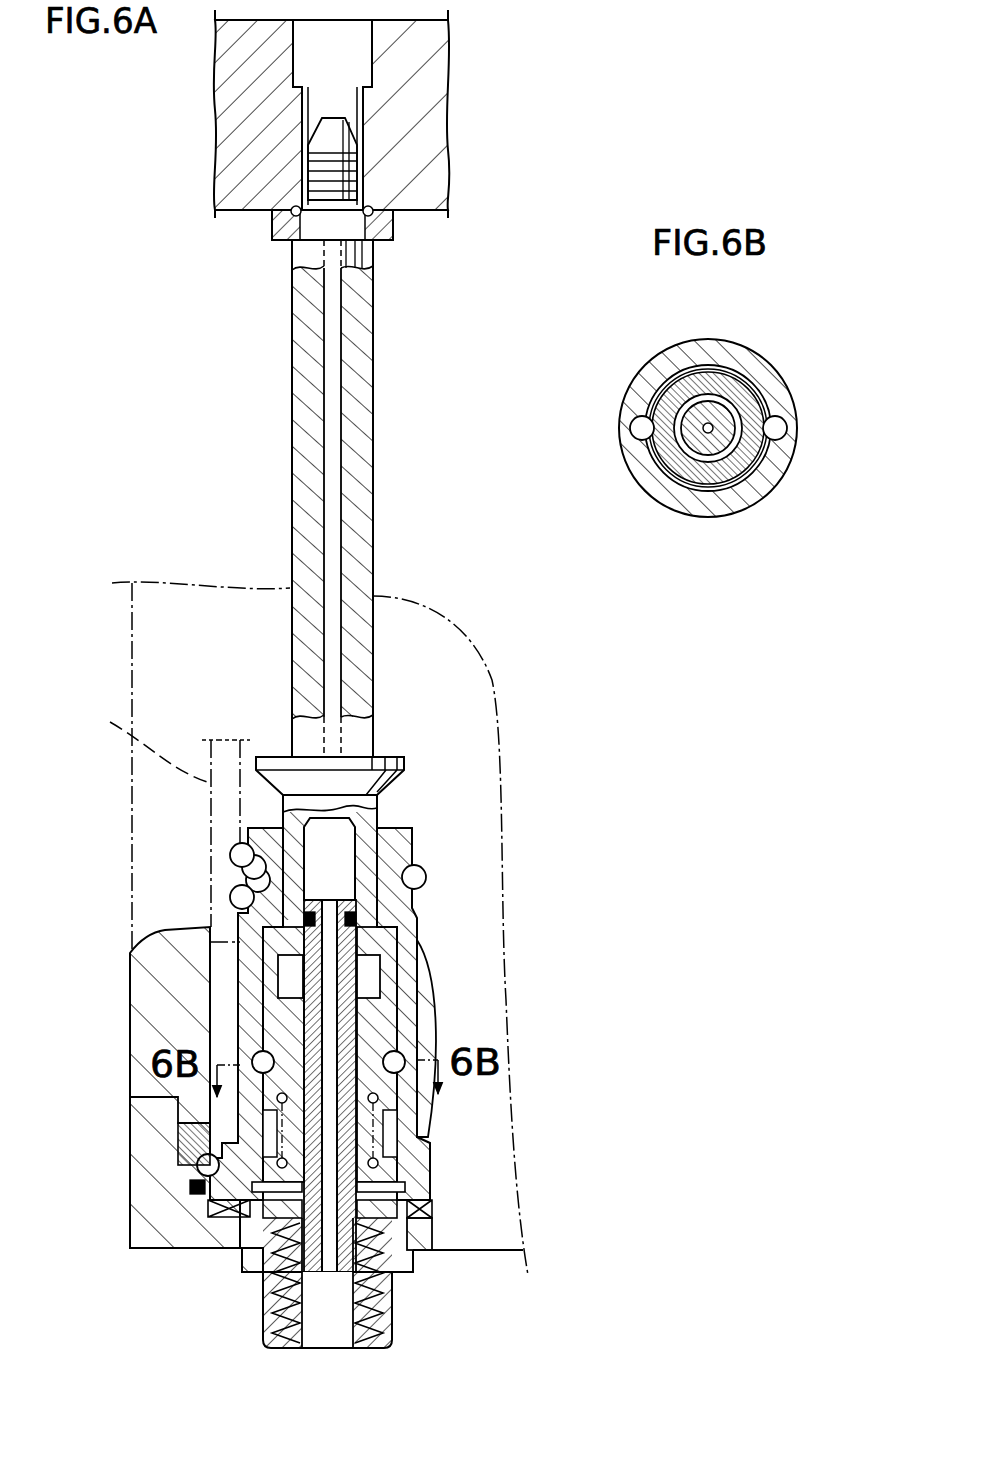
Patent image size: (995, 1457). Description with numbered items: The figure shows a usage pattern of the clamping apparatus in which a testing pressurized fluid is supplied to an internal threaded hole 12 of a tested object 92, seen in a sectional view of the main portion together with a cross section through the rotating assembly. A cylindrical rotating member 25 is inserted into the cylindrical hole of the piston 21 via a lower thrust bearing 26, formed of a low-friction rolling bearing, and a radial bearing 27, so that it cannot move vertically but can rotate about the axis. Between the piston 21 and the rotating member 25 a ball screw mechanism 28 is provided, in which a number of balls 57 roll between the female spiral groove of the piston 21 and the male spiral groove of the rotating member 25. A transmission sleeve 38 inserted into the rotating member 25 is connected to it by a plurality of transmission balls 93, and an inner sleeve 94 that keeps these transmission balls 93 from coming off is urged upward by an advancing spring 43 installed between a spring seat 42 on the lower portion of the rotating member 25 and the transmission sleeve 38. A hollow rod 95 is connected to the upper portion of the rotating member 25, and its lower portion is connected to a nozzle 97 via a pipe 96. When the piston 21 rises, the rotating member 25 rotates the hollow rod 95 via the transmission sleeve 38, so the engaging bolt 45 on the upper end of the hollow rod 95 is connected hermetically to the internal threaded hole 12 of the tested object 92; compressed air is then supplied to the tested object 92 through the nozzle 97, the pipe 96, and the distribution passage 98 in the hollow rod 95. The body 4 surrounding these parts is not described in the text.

In FIG. 6A, the body 4 is at (126, 982).
In FIG. 6A, the internal threaded hole 12 is at (352, 99).
In FIG. 6A, the piston 21 is at (140, 741).
In FIG. 6A, the rotating member 25 is at (420, 897).
In FIG. 6B, the rotating member 25 is at (764, 350).
In FIG. 6A, the lower thrust bearing 26 is at (210, 1212).
In FIG. 6A, the radial bearing 27 is at (198, 1168).
In FIG. 6A, the ball screw mechanism 28 is at (216, 858).
In FIG. 6A, the transmission sleeve 38 is at (396, 970).
In FIG. 6B, the transmission sleeve 38 is at (762, 398).
In FIG. 6A, the spring seat 42 is at (398, 1196).
In FIG. 6A, the advancing spring 43 is at (398, 1147).
In FIG. 6A, the engaging bolt 45 is at (376, 173).
In FIG. 6A, the balls 57 is at (427, 872).
In FIG. 6A, the tested object 92 is at (437, 73).
In FIG. 6A, the transmission balls 93 is at (395, 1108).
In FIG. 6B, the transmission balls 93 is at (630, 426).
In FIG. 6A, the inner sleeve 94 is at (398, 1016).
In FIG. 6B, the inner sleeve 94 is at (677, 458).
In FIG. 6A, the hollow rod 95 is at (377, 454).
In FIG. 6A, the pipe 96 is at (320, 898).
In FIG. 6B, the pipe 96 is at (705, 447).
In FIG. 6A, the nozzle 97 is at (380, 1305).
In FIG. 6A, the distribution passage 98 is at (332, 522).